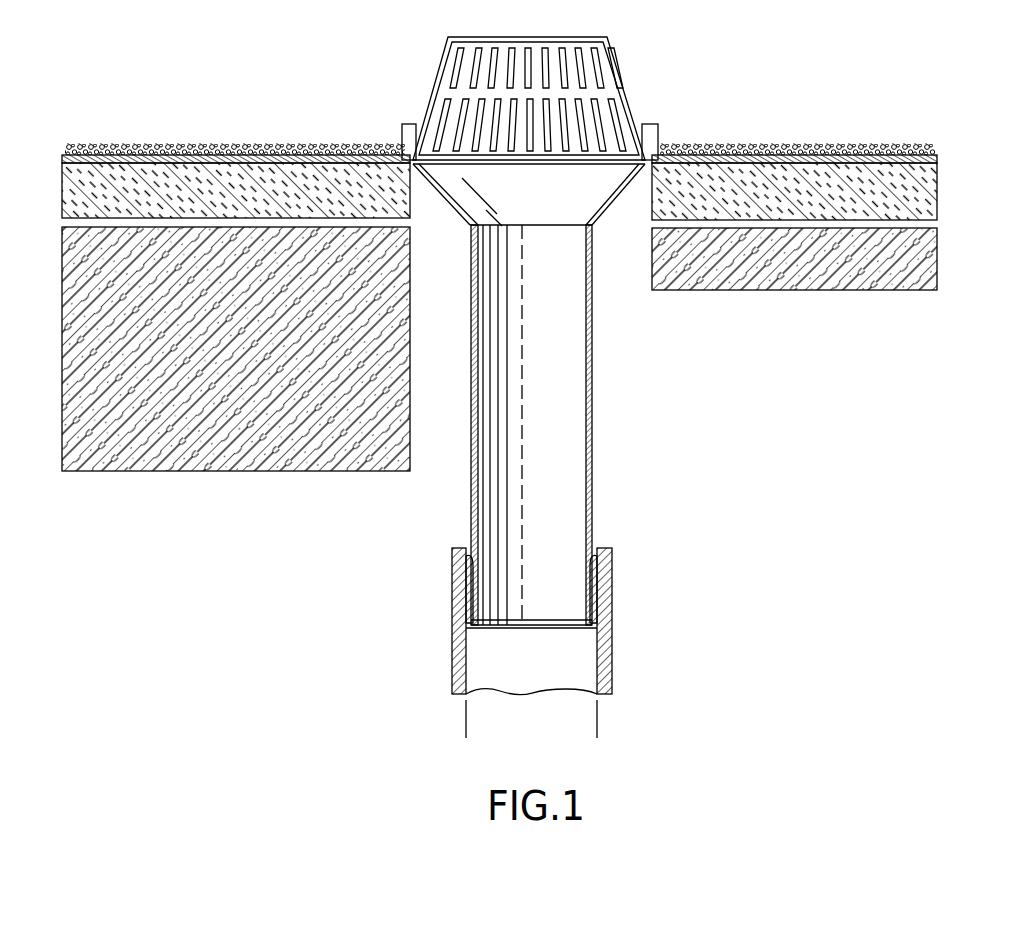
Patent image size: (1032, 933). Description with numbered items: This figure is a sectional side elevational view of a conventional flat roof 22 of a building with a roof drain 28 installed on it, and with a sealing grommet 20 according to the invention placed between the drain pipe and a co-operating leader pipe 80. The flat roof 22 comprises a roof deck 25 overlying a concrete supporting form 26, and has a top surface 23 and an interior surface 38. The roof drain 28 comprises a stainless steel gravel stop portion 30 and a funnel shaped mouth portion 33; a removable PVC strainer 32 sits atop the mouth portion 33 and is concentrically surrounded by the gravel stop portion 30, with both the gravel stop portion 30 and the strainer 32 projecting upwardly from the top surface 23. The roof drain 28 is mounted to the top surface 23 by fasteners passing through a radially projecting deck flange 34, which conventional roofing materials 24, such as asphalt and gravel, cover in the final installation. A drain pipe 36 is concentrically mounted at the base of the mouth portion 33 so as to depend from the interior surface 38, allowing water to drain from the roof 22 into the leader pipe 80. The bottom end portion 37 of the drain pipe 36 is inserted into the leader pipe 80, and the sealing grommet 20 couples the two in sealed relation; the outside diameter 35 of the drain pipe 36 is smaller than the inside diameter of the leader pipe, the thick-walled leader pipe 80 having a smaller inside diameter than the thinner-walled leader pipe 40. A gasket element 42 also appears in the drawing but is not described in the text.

The sealing grommet 20 is at (530, 645).
The flat roof 22 is at (779, 75).
The top surface 23 is at (927, 152).
The roofing materials 24 is at (266, 160).
The roof deck 25 is at (73, 168).
The concrete supporting form 26 is at (168, 457).
The roof drain 28 is at (665, 325).
The gravel stop portion 30 is at (660, 132).
The PVC strainer 32 is at (625, 48).
The mouth portion 33 is at (420, 180).
The deck flange 34 is at (645, 170).
The outside diameter 35 is at (460, 496).
The drain pipe 36 is at (592, 391).
The bottom end portion 37 is at (587, 600).
The interior surface 38 is at (263, 473).
The leader pipe 40 is at (587, 729).
The gasket 42 is at (612, 577).
The leader pipe 80 is at (612, 682).